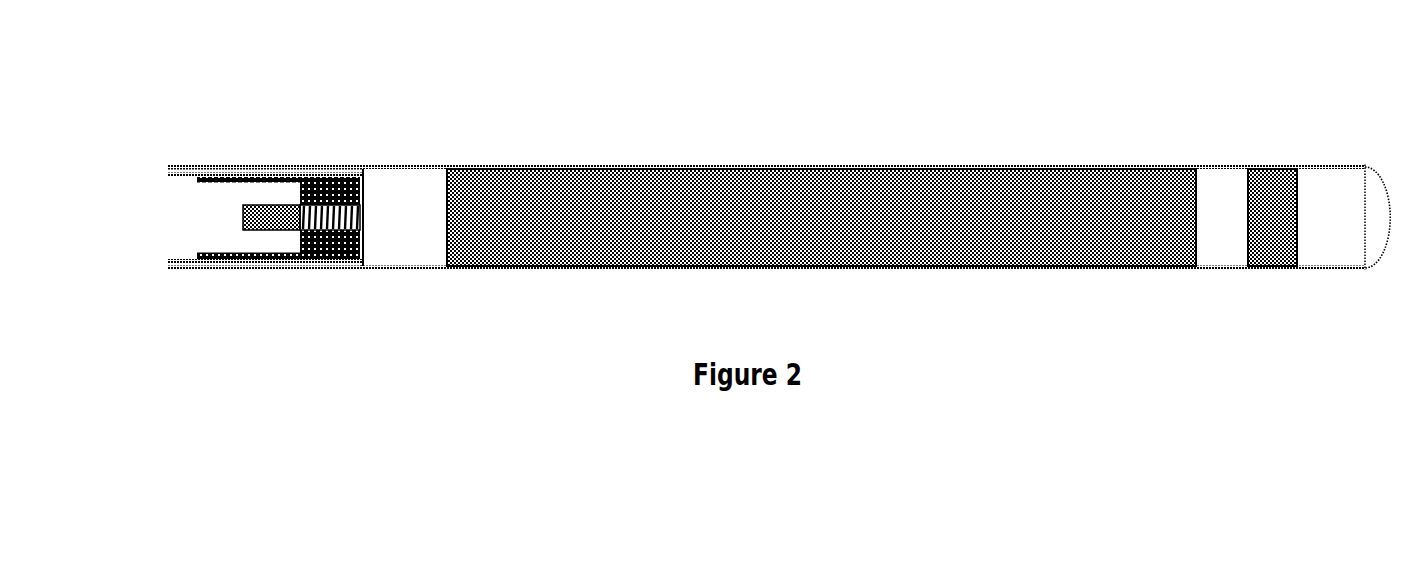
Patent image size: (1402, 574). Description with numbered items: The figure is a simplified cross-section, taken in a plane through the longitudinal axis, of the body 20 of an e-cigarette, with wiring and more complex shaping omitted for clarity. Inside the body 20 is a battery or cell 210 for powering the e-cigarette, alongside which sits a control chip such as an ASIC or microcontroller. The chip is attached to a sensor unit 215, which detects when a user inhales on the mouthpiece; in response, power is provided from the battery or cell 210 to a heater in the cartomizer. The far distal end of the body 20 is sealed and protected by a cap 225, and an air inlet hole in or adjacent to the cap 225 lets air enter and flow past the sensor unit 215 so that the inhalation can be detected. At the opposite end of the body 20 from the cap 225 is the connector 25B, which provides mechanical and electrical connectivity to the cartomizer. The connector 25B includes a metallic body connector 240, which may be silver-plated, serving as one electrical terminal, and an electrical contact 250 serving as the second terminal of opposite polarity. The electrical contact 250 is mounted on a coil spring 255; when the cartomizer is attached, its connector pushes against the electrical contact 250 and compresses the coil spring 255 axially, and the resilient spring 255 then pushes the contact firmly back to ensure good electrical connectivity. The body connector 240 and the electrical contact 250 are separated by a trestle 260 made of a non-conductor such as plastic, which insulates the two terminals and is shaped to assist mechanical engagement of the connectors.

The body 20 is at (896, 287).
The connector 25B is at (265, 163).
The battery or cell 210 is at (822, 218).
The sensor unit 215 is at (1273, 217).
The cap 225 is at (1372, 218).
The body connector 240 is at (178, 268).
The electrical contact 250 is at (270, 218).
The coil spring 255 is at (317, 260).
The trestle 260 is at (333, 177).